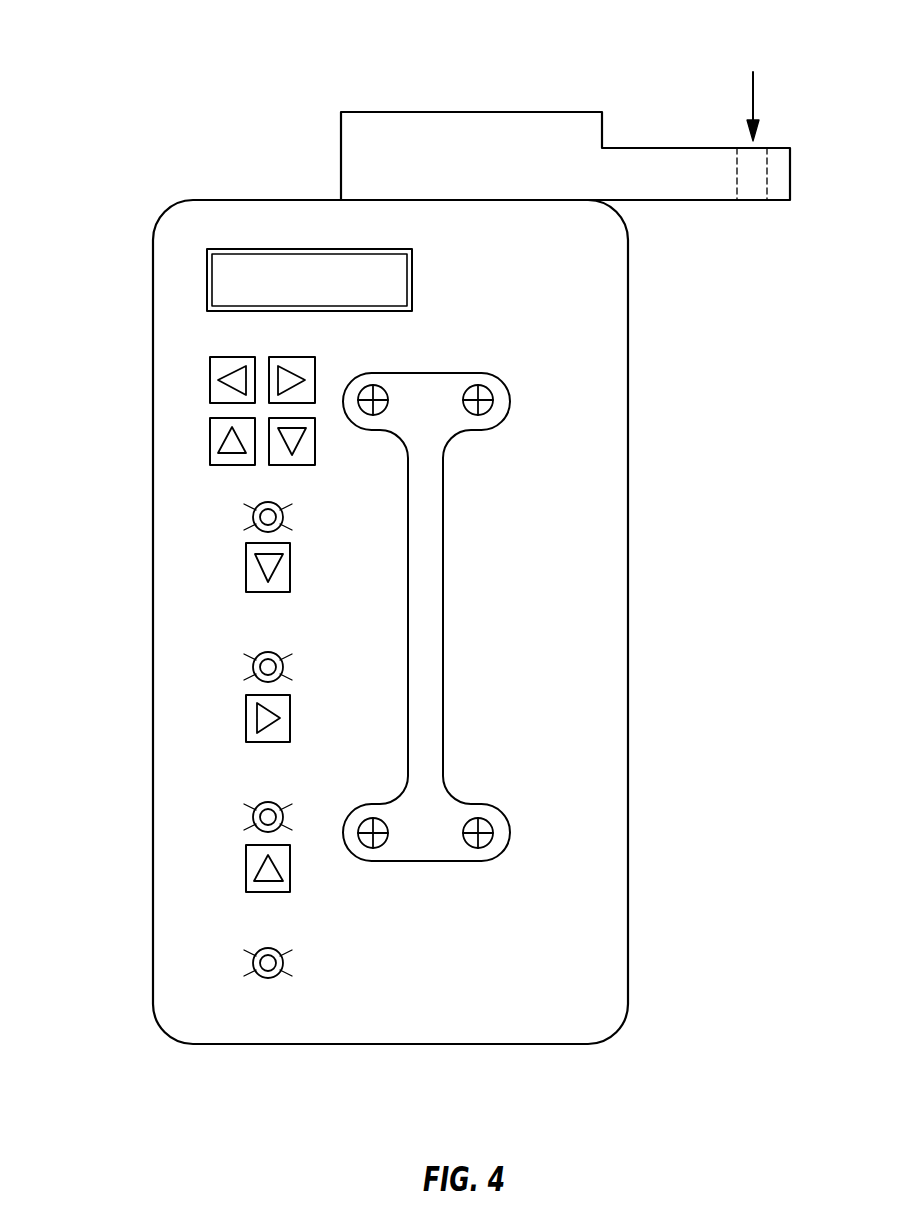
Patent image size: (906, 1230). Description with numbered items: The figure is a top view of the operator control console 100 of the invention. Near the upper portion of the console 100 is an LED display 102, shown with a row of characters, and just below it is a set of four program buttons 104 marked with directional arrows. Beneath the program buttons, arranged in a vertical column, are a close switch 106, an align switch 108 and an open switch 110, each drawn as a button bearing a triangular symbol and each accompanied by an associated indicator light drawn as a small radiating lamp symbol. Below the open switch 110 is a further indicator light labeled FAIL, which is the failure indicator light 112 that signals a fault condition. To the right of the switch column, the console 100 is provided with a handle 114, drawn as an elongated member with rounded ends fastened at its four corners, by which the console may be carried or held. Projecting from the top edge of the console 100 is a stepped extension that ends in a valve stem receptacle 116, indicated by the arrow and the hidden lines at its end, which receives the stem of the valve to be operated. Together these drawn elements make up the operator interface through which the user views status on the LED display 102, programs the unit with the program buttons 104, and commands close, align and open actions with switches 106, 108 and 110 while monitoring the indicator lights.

The console 100 is at (435, 622).
The LED display 102 is at (222, 271).
The program buttons 104 is at (165, 450).
The close switch 106 is at (184, 563).
The align switch 108 is at (184, 710).
The open switch 110 is at (184, 863).
The fail indicator 112 is at (184, 988).
The handle 114 is at (438, 617).
The valve stem receptacle 116 is at (604, 106).